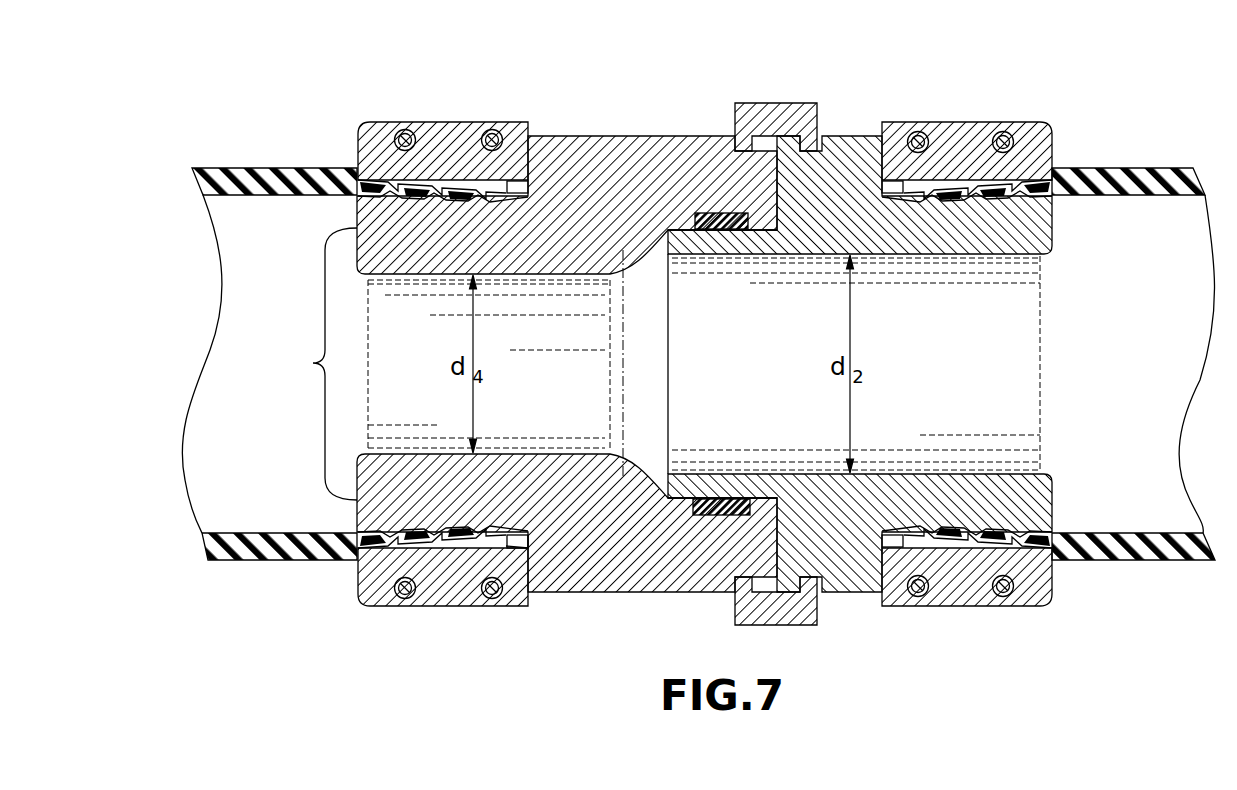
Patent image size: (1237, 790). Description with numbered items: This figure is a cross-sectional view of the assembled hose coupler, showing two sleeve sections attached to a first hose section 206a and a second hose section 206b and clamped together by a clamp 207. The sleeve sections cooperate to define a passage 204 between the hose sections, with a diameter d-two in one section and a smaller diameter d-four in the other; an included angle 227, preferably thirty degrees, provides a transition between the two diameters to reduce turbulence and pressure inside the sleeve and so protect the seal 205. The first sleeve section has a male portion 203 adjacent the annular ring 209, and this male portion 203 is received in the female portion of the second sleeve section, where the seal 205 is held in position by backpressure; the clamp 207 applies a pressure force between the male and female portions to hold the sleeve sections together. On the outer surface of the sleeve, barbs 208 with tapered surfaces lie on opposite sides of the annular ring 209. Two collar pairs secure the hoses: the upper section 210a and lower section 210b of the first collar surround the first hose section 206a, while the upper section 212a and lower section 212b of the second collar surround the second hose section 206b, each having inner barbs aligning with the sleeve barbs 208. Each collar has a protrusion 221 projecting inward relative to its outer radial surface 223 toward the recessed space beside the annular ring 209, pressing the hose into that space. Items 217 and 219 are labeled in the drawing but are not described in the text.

The male portion 203 is at (683, 485).
The passage 204 is at (1017, 365).
The seal 205 is at (720, 212).
The first hose section 206a is at (1163, 168).
The second hose section 206b is at (232, 168).
The clamp 207 is at (813, 625).
The barbs 208 is at (364, 180).
The annular ring 209 is at (637, 136).
The upper section of first collar 210a is at (1017, 122).
The lower section of first collar 210b is at (1020, 607).
The upper section of second collar 212a is at (433, 122).
The lower section of second collar 212b is at (412, 607).
The pipe end region 217 is at (311, 364).
The insert face 219 is at (525, 545).
The protrusion 221 is at (517, 552).
The outer radial surface 223 is at (517, 607).
The included angle 227 is at (518, 187).